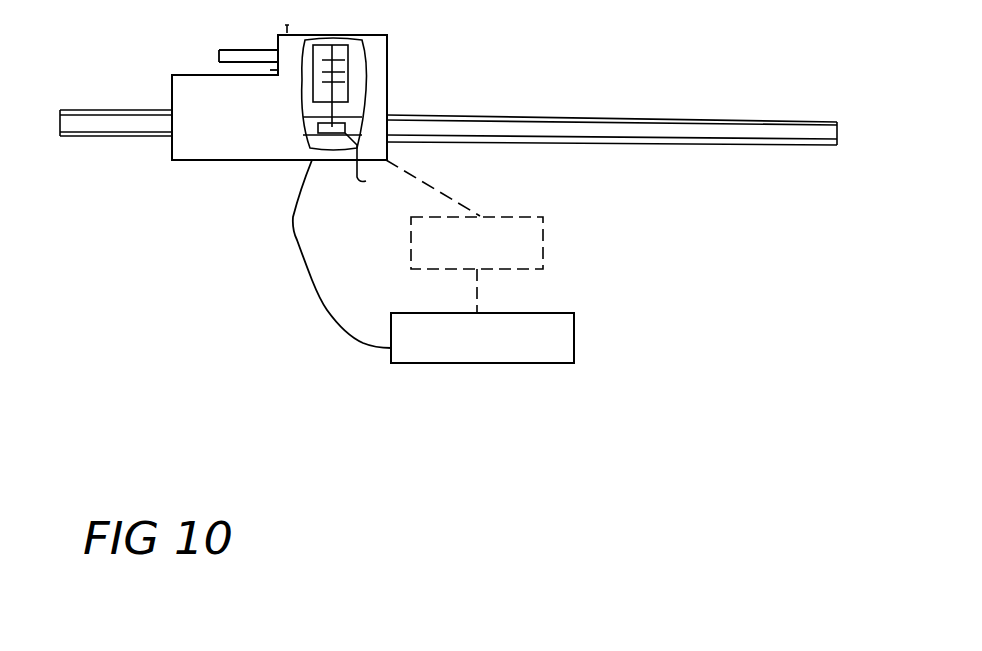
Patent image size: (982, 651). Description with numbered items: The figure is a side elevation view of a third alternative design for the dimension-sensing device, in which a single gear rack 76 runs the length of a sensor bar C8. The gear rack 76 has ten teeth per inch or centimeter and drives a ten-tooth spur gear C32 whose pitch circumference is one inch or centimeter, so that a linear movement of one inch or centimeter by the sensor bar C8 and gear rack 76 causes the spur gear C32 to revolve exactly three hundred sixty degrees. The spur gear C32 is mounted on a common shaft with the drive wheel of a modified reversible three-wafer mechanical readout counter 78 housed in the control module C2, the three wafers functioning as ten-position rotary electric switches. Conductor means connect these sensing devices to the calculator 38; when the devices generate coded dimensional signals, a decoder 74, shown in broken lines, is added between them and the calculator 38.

The mechanical readout counter 78 is at (342, 55).
The control module C2 is at (197, 160).
The spur gear C32 is at (355, 164).
The sensor bar C8 is at (757, 120).
The gear rack 76 is at (828, 133).
The decoder 74 is at (547, 228).
The calculator 38 is at (574, 336).